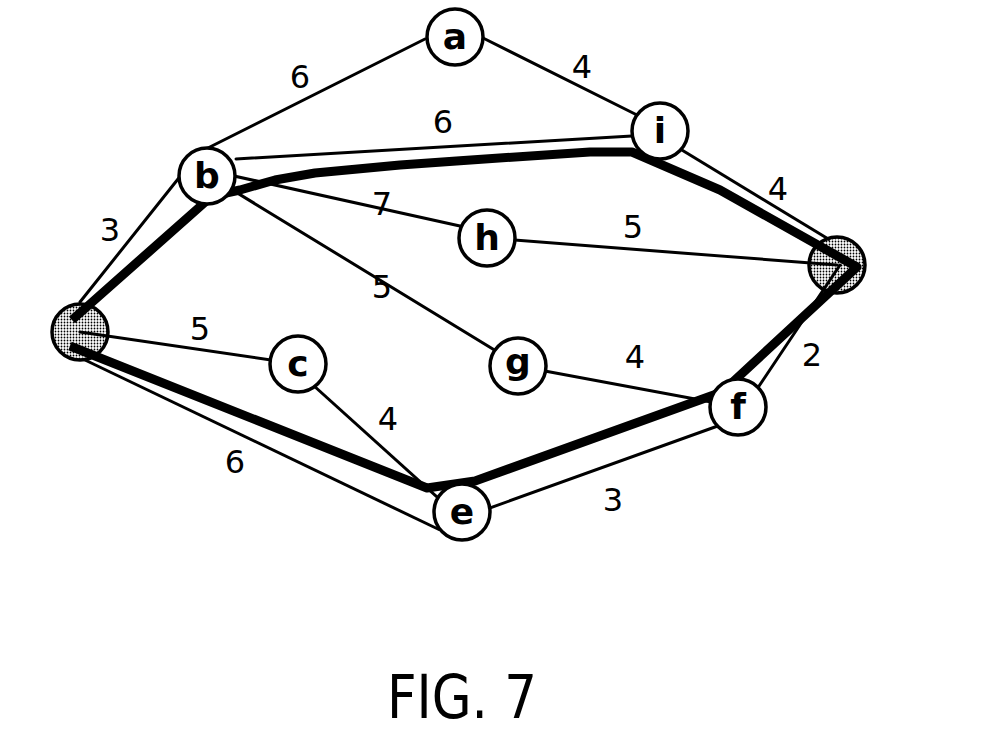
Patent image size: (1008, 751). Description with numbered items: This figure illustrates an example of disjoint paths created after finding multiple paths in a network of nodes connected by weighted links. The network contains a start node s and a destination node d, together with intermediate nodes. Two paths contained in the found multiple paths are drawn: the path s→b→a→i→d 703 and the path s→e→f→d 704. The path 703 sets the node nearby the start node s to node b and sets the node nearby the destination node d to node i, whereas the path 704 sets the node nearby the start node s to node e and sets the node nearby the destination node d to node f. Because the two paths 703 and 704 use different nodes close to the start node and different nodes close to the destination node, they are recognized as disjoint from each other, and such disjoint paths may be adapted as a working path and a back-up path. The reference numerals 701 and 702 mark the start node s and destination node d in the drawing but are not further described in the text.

The source node s 701 is at (62, 353).
The destination node d 702 is at (867, 277).
The path s→b→a→i→d 703 is at (702, 160).
The path s→e→f→d 704 is at (333, 480).